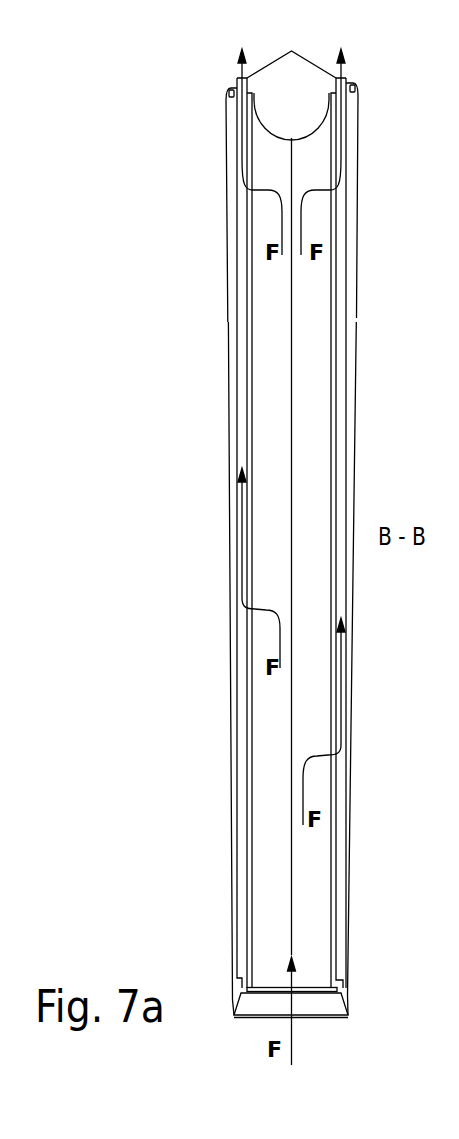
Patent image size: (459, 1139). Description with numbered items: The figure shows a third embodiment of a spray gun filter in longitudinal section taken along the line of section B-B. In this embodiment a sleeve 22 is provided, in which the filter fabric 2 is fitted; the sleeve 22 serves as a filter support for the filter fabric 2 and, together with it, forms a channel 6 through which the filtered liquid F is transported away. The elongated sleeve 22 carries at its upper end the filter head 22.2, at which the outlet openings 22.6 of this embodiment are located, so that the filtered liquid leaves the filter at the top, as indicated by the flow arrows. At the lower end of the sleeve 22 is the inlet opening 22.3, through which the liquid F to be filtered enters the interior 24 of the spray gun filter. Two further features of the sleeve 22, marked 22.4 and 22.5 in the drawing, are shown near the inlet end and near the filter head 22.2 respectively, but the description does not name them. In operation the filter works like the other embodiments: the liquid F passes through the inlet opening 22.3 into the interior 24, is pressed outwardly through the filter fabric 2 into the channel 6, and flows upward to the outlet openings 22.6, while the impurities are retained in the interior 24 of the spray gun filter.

The filter fabric 2 is at (246, 329).
The channel 6 is at (343, 293).
The sleeve 22 is at (355, 442).
The filter head 22.2 is at (309, 60).
The inlet opening 22.3 is at (323, 1018).
The flange 22.4 is at (349, 1011).
The fastening lug 22.5 is at (362, 87).
The outlet openings 22.6 is at (238, 77).
The interior 24 is at (313, 868).